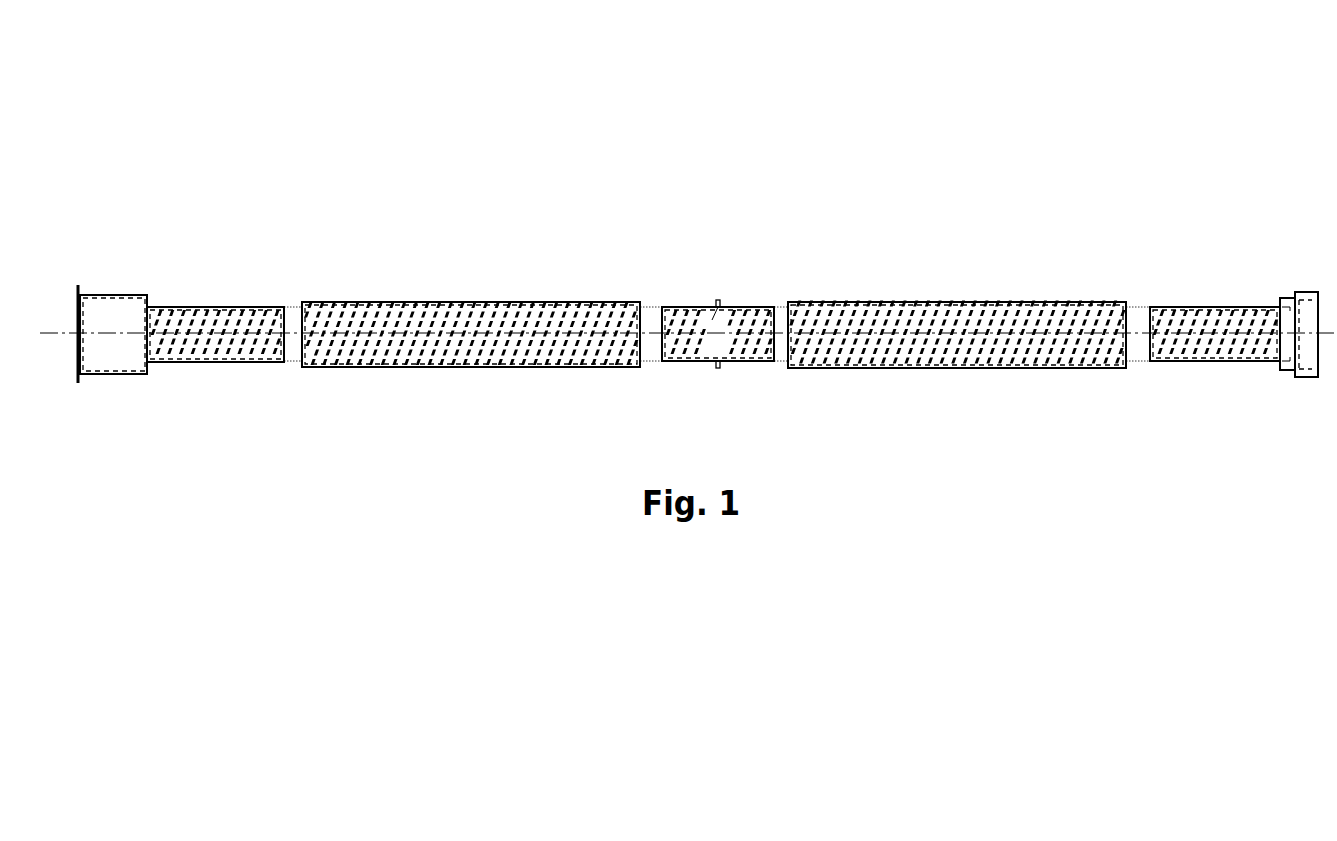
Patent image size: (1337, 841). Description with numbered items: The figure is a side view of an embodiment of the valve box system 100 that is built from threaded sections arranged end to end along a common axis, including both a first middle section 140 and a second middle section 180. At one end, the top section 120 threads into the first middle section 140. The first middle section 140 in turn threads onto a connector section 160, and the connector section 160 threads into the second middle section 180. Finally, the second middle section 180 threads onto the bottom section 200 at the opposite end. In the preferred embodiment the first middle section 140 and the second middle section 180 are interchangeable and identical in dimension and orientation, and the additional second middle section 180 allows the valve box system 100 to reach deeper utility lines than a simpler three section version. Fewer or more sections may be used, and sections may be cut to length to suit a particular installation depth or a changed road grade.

The valve box system 100 is at (853, 90).
The top section 120 is at (1238, 268).
The first middle section 140 is at (974, 265).
The connector section 160 is at (728, 263).
The second middle section 180 is at (479, 261).
The bottom section 200 is at (195, 263).